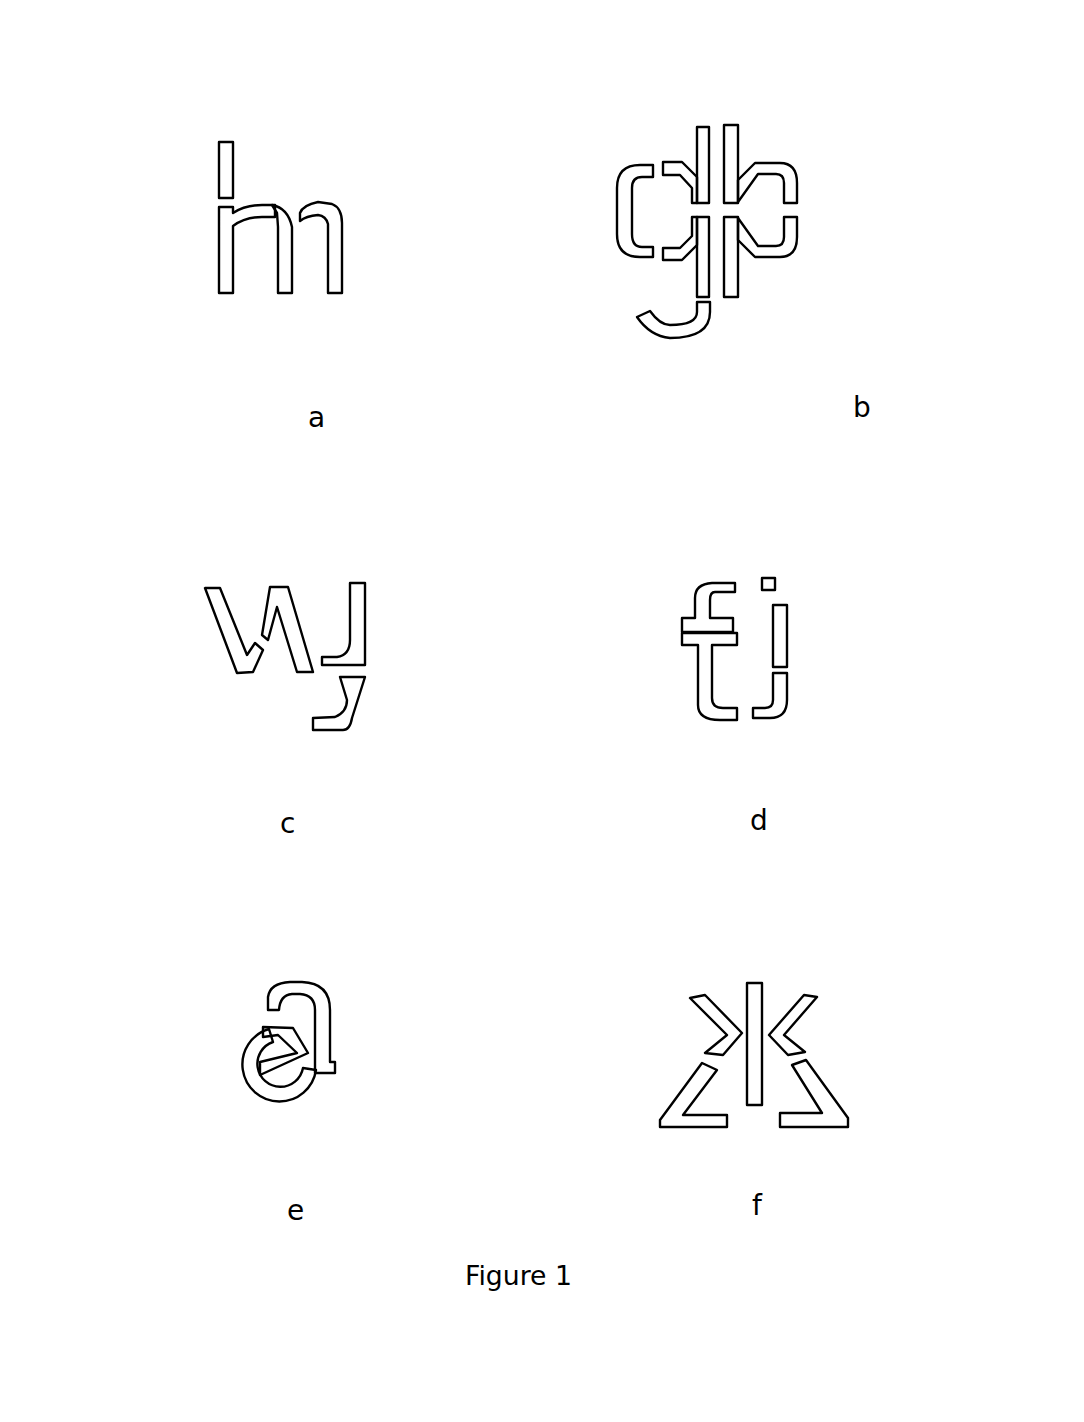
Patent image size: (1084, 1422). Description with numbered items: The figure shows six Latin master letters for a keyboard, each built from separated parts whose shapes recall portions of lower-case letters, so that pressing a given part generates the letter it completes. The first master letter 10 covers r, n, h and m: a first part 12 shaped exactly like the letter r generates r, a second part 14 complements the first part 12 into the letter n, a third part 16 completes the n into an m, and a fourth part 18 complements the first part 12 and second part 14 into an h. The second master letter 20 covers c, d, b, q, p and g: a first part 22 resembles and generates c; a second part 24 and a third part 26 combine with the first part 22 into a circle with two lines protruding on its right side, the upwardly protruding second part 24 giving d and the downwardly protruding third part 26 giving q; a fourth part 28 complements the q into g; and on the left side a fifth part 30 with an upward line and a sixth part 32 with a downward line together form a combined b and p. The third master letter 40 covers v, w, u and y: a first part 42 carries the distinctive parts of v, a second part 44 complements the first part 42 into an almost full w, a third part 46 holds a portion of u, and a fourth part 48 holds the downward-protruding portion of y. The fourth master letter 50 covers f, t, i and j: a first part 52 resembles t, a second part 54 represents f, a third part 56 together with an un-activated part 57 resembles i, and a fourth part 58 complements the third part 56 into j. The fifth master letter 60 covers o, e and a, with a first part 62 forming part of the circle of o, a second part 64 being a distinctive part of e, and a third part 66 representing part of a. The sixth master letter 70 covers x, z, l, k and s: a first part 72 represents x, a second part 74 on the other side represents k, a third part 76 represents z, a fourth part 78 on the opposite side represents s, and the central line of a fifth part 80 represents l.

In FIG. 1a, the master letter 10 is at (306, 133).
In FIG. 1a, the first part 12 is at (223, 252).
In FIG. 1a, the second part 14 is at (285, 278).
In FIG. 1a, the third part 16 is at (335, 259).
In FIG. 1a, the fourth part 18 is at (225, 165).
In FIG. 1b, the master letter 20 is at (749, 72).
In FIG. 1b, the first part 22 is at (620, 213).
In FIG. 1b, the second part 24 is at (702, 148).
In FIG. 1b, the third part 26 is at (702, 260).
In FIG. 1b, the fourth part 28 is at (702, 322).
In FIG. 1b, the fifth part 30 is at (765, 167).
In FIG. 1b, the sixth part 32 is at (773, 253).
In FIG. 1c, the master letter 40 is at (255, 529).
In FIG. 1c, the first part 42 is at (218, 623).
In FIG. 1c, the second part 44 is at (287, 603).
In FIG. 1c, the third part 46 is at (358, 627).
In FIG. 1c, the fourth part 48 is at (348, 705).
In FIG. 1d, the master letter 50 is at (723, 536).
In FIG. 1d, the first part 52 is at (707, 680).
In FIG. 1d, the second part 54 is at (700, 600).
In FIG. 1d, the third part 56 is at (782, 633).
In FIG. 1d, the un-activated part 57 is at (775, 582).
In FIG. 1d, the fourth part 58 is at (775, 698).
In FIG. 1e, the master letter 60 is at (250, 955).
In FIG. 1e, the first part 62 is at (258, 1088).
In FIG. 1e, the second part 64 is at (267, 1028).
In FIG. 1e, the third part 66 is at (320, 1028).
In FIG. 1f, the master letter 70 is at (705, 950).
In FIG. 1f, the first part 72 is at (713, 1015).
In FIG. 1f, the second part 74 is at (800, 1008).
In FIG. 1f, the third part 76 is at (683, 1098).
In FIG. 1f, the fourth part 78 is at (817, 1088).
In FIG. 1f, the fifth part 80 is at (757, 985).